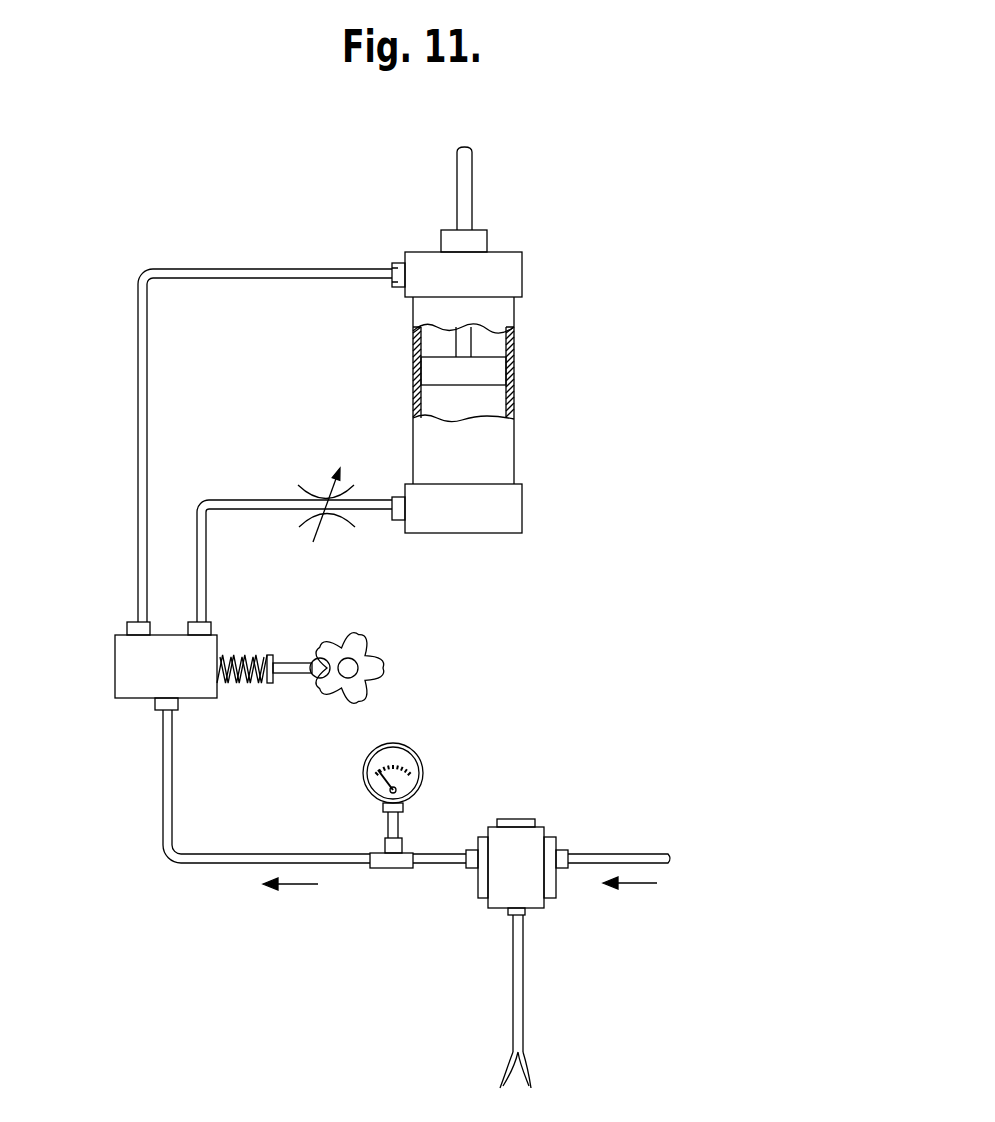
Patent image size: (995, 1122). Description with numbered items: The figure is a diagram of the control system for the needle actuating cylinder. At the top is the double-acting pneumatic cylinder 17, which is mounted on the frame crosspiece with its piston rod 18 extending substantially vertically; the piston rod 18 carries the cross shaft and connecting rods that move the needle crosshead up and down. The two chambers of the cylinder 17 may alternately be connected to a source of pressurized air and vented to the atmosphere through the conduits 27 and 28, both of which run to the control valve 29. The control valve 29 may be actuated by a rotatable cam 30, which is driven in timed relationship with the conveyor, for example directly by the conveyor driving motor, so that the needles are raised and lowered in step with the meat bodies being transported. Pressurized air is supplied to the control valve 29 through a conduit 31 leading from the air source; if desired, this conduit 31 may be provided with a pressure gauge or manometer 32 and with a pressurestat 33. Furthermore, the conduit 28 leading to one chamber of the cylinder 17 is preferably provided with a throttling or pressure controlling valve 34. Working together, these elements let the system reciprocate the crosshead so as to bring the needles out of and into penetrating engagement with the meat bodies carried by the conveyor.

The double-acting pneumatic cylinder 17 is at (514, 378).
The piston rod 18 is at (472, 190).
The conduit 27 is at (138, 408).
The conduit 28 is at (252, 500).
The control valve 29 is at (115, 672).
The rotatable cam 30 is at (376, 652).
The conduit 31 is at (212, 865).
The pressure gauge 32 is at (414, 757).
The pressurestat 33 is at (540, 835).
The throttling or pressure controlling valve 34 is at (314, 488).